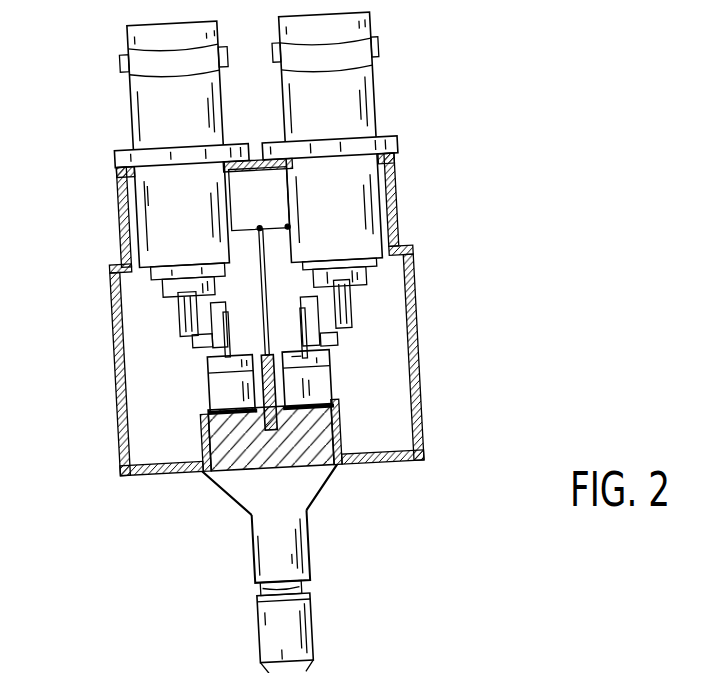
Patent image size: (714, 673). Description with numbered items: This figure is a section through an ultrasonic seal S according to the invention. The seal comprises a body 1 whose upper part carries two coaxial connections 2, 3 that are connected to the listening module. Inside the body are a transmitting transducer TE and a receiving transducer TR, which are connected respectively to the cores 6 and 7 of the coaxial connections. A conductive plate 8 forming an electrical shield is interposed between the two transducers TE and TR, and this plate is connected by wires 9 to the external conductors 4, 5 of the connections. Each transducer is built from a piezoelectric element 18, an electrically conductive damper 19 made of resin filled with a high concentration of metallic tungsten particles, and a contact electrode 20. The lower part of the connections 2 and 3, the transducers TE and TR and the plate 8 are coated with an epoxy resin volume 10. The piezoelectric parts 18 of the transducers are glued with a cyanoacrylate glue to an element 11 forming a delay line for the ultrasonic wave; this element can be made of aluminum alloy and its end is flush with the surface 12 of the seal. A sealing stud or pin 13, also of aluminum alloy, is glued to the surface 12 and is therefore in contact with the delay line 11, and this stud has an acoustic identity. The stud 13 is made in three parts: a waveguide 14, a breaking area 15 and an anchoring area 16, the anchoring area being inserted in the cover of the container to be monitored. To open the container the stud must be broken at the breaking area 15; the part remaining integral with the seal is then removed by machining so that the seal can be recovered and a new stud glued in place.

The body 1 is at (432, 454).
The coaxial connection 2 is at (380, 70).
The coaxial connection 3 is at (126, 89).
The external conductor 4 is at (377, 118).
The external conductor 5 is at (147, 127).
The core 6 is at (346, 299).
The core 7 is at (183, 301).
The conductive plate 8 is at (265, 426).
The wires 9 is at (262, 256).
The epoxy resin volume 10 is at (133, 282).
The delay line 11 is at (313, 453).
The surface of the seal 12 is at (385, 466).
The sealing stud 13 is at (247, 573).
The waveguide 14 is at (240, 482).
The breaking area 15 is at (257, 588).
The anchoring area 16 is at (277, 632).
The piezoelectric element 18 is at (198, 414).
The electrically conductive damper 19 is at (218, 382).
The contact electrode 20 is at (218, 365).
The sensor assembly S is at (442, 203).
The transmitting transducer TE is at (204, 395).
The receiving transducer TR is at (343, 389).